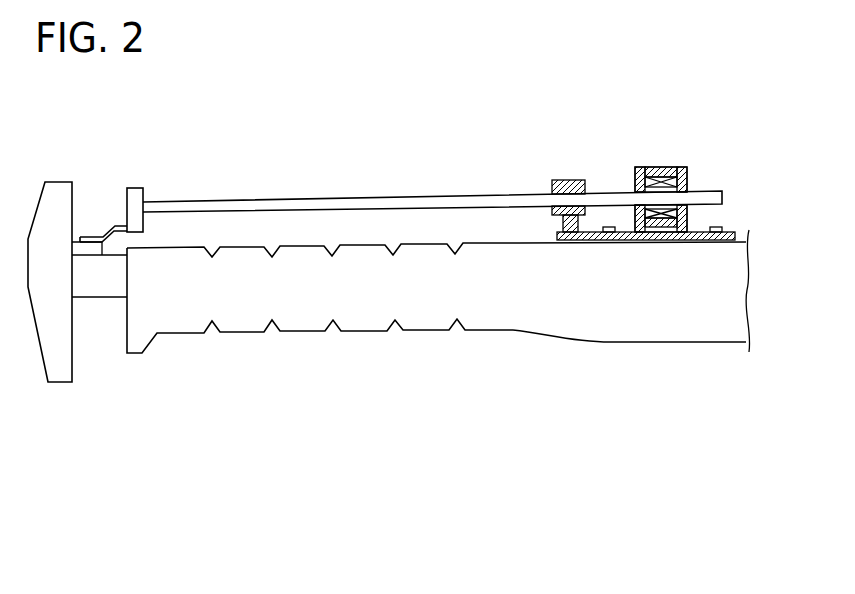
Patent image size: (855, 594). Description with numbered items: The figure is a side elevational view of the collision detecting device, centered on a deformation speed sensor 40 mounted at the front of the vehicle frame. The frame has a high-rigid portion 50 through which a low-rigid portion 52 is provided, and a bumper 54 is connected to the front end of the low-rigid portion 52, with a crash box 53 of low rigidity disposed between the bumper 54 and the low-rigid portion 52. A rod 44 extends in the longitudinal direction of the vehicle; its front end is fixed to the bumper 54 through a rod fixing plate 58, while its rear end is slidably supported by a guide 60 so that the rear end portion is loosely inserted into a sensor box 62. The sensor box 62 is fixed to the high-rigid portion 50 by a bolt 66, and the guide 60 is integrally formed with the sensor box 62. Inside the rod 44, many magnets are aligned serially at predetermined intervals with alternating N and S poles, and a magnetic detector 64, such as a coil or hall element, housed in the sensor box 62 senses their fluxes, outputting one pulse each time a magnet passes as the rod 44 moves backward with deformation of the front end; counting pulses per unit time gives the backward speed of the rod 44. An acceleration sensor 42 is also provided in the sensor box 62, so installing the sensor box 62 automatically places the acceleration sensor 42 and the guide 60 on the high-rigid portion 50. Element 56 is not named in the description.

The deformation speed sensor 40 is at (333, 132).
The acceleration sensor 42 is at (655, 240).
The rod 44 is at (403, 196).
The high-rigid portion 50 is at (648, 344).
The low-rigid portion 52 is at (357, 321).
The crash box 53 is at (100, 282).
The bumper 54 is at (58, 384).
The contact spring 56 is at (106, 234).
The rod fixing plate 58 is at (136, 188).
The guide 60 is at (568, 180).
The sensor box 62 is at (685, 167).
The magnetic detector 64 is at (658, 167).
The bolt 66 is at (722, 227).